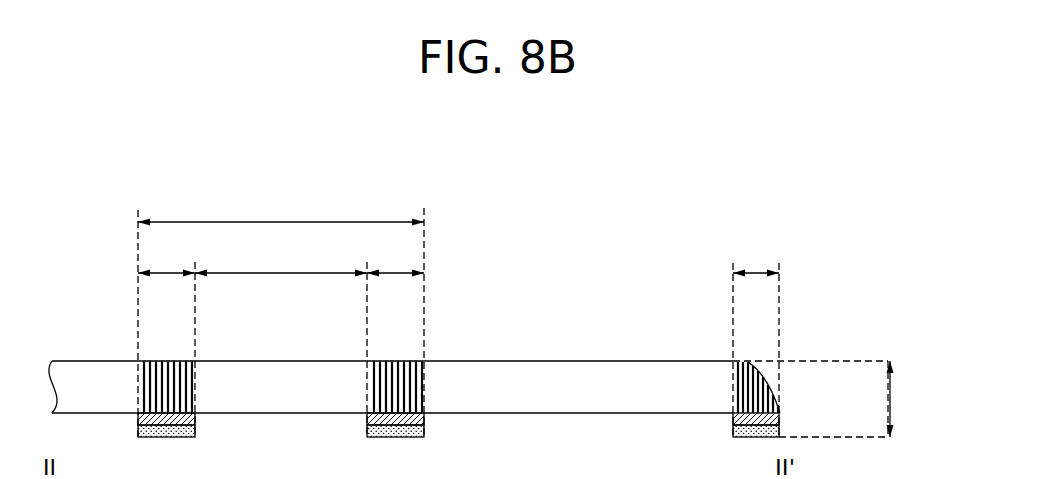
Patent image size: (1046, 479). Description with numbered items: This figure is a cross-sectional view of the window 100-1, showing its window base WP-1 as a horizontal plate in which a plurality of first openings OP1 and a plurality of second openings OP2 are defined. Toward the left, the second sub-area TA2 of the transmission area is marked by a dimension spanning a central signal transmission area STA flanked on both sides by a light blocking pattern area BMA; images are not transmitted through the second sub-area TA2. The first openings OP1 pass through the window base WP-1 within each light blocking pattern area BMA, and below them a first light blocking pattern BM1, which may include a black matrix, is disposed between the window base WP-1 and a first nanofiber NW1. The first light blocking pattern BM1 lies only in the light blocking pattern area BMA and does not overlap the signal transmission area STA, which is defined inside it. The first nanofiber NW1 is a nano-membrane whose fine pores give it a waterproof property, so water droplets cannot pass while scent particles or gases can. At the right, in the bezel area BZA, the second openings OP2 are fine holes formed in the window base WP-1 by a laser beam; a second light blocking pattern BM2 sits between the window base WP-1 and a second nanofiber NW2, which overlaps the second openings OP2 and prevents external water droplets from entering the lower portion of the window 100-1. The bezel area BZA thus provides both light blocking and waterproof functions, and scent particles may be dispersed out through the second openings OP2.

The window base WP-1 is at (722, 392).
The second sub-area TA2 is at (281, 210).
The light blocking pattern area BMA is at (281, 329).
The signal transmission area STA is at (281, 261).
The first openings OP1 is at (418, 362).
The second openings OP2 is at (760, 370).
The bezel area BZA is at (756, 261).
The first light blocking pattern BM1 is at (424, 418).
The first nanofiber NW1 is at (424, 430).
The second light blocking pattern BM2 is at (779, 417).
The second nanofiber NW2 is at (779, 430).
The window 100-1 is at (845, 399).